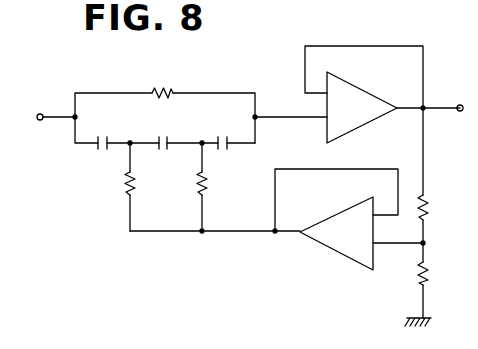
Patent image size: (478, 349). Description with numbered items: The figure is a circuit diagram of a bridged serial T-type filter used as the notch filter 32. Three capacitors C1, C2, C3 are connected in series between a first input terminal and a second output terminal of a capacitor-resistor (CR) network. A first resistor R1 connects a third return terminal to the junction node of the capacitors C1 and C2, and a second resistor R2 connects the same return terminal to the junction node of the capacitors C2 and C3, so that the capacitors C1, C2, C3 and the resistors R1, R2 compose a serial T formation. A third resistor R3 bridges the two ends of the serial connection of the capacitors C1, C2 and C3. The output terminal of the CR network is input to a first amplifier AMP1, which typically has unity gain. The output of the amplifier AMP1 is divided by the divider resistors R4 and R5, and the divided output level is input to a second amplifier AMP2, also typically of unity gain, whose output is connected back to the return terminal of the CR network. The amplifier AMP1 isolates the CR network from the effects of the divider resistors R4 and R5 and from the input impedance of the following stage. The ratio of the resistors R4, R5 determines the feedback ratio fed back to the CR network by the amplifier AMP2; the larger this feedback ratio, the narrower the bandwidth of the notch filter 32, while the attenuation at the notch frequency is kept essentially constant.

The notch filter 32 is at (413, 46).
The first resistor R1 is at (141, 187).
The second resistor R2 is at (213, 187).
The third resistor R3 is at (164, 84).
The divider resistor R4 is at (435, 175).
The divider resistor R5 is at (435, 280).
The capacitor C1 is at (102, 130).
The capacitor C2 is at (164, 130).
The capacitor C3 is at (222, 130).
The first amplifier AMP1 is at (362, 107).
The second amplifier AMP2 is at (337, 233).